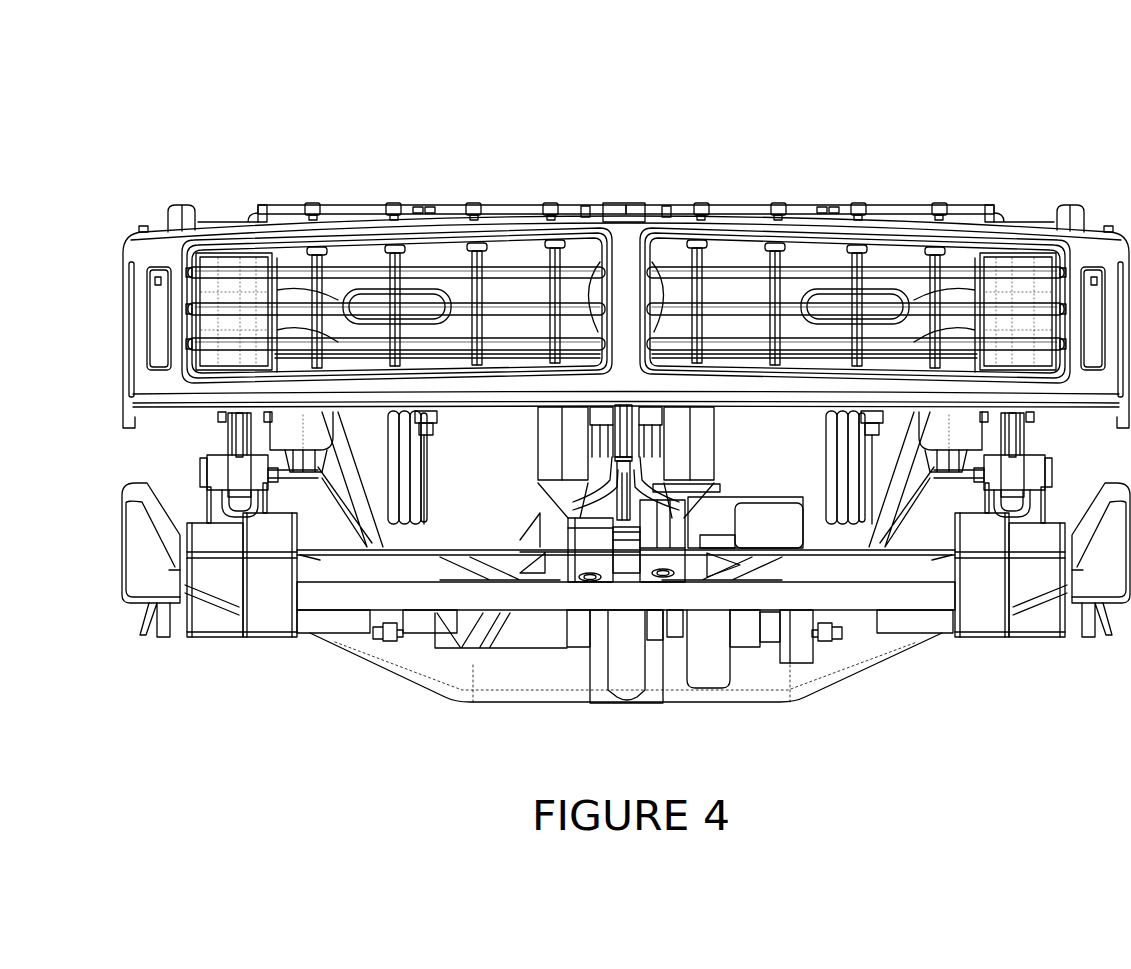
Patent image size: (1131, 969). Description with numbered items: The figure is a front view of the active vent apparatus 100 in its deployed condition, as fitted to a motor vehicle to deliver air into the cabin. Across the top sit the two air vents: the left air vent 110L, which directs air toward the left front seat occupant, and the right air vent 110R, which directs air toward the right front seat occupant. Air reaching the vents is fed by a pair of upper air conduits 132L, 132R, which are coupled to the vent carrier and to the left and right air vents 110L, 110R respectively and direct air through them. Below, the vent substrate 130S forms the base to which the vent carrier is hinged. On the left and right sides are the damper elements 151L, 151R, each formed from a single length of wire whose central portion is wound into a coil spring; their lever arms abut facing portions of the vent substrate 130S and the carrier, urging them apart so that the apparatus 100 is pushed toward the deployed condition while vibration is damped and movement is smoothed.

The active vent apparatus 100 is at (970, 76).
The left air vent 110L is at (290, 228).
The right air vent 110R is at (967, 230).
The left upper air conduit 132L is at (327, 202).
The right upper air conduit 132R is at (928, 203).
The vent substrate 130S is at (338, 607).
The left damper element 151L is at (413, 515).
The right damper element 151R is at (843, 517).